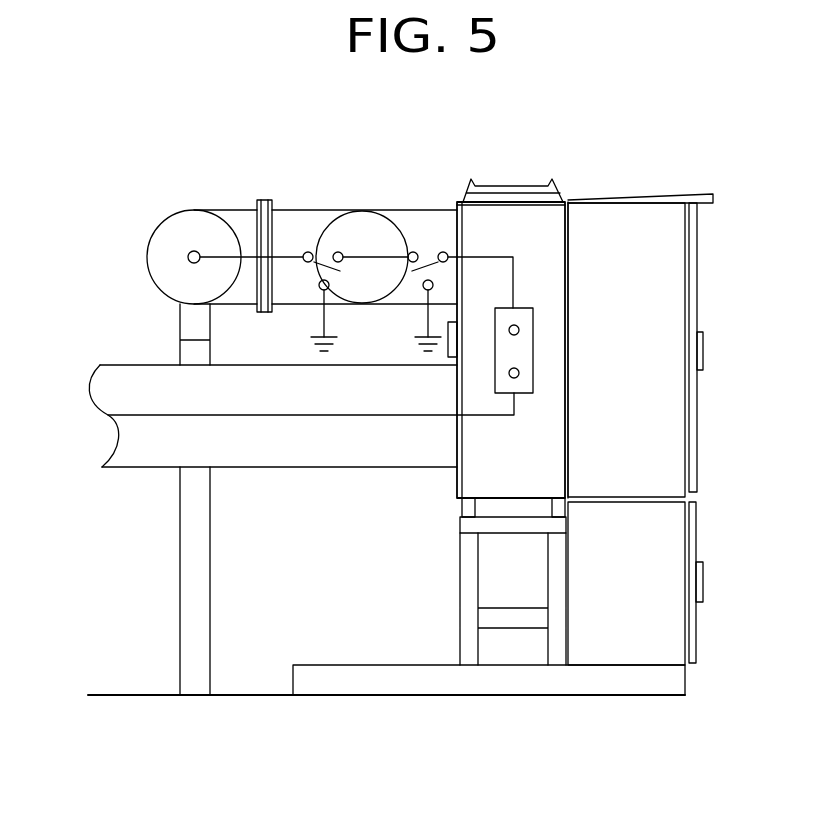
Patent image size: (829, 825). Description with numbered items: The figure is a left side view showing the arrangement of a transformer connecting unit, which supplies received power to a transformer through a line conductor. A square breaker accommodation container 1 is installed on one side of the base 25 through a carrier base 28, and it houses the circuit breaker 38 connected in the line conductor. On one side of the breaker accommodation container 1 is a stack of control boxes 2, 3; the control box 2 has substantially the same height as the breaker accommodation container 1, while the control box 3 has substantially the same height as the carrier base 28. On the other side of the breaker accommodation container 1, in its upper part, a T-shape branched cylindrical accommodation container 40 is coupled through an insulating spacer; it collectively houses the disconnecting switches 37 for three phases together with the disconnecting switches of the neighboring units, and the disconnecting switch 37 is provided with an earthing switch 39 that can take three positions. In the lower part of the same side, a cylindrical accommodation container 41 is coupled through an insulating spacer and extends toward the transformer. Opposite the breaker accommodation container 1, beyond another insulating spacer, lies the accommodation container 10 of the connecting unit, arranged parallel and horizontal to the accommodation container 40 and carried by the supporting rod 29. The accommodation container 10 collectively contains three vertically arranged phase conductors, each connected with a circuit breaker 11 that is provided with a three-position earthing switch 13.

The breaker accommodation container 1 is at (547, 255).
The control box 2 is at (675, 437).
The control box 3 is at (675, 542).
The accommodation container 10 is at (157, 253).
The circuit breaker 11 is at (327, 250).
The earthing switch 13 is at (310, 343).
The base 25 is at (618, 685).
The carrier base 28 is at (473, 660).
The supporting rod 29 is at (192, 555).
The disconnecting switch 37 is at (428, 248).
The circuit breaker 38 is at (533, 347).
The earthing switch 39 is at (418, 347).
The accommodation container 40 is at (365, 215).
The accommodation container 41 is at (133, 438).